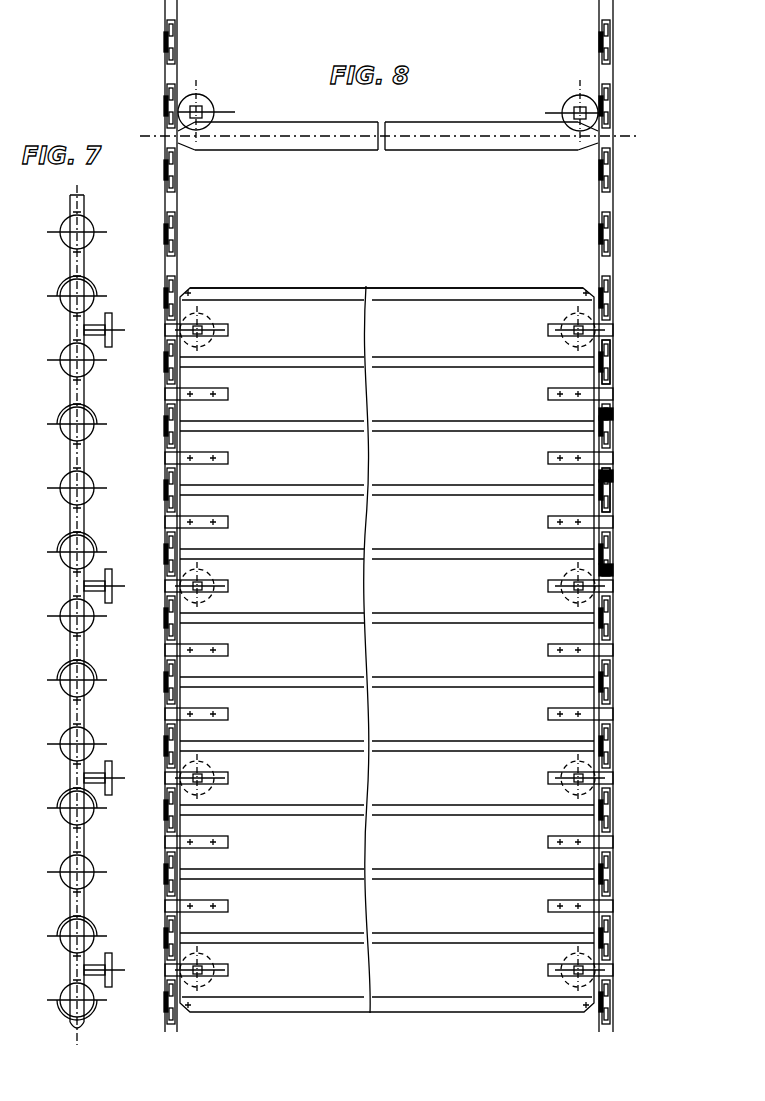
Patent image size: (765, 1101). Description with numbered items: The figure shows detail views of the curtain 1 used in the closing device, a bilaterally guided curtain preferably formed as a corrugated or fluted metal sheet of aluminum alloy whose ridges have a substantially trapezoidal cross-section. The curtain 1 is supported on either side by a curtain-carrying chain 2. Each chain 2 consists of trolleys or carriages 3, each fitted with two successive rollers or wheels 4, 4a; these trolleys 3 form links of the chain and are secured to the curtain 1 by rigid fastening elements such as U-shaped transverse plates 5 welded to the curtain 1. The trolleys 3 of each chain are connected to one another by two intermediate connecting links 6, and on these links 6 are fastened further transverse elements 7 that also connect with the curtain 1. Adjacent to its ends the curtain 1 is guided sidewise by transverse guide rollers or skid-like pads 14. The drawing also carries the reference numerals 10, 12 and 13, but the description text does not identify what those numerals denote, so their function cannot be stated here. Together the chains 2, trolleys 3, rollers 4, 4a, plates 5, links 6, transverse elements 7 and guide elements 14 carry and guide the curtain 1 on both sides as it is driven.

In FIG. 8, the curtain 1 is at (400, 320).
In FIG. 8, the curtain-carrying chain 2 is at (638, 106).
In FIG. 8, the trolley 3 is at (618, 381).
In FIG. 8, the roller 4 is at (616, 386).
In FIG. 8, the roller 4a is at (614, 418).
In FIG. 8, the U-shaped transverse plate 5 is at (548, 396).
In FIG. 8, the intermediate connecting link 6 is at (614, 478).
In FIG. 8, the transverse element 7 is at (548, 458).
In FIG. 7, the guide roller 10 is at (112, 346).
In FIG. 8, the guide roller 10 is at (563, 346).
In FIG. 8, the slat top edge 12 is at (483, 292).
In FIG. 8, the connecting rod 13 is at (413, 143).
In FIG. 8, the transverse guide roller 14 is at (209, 100).